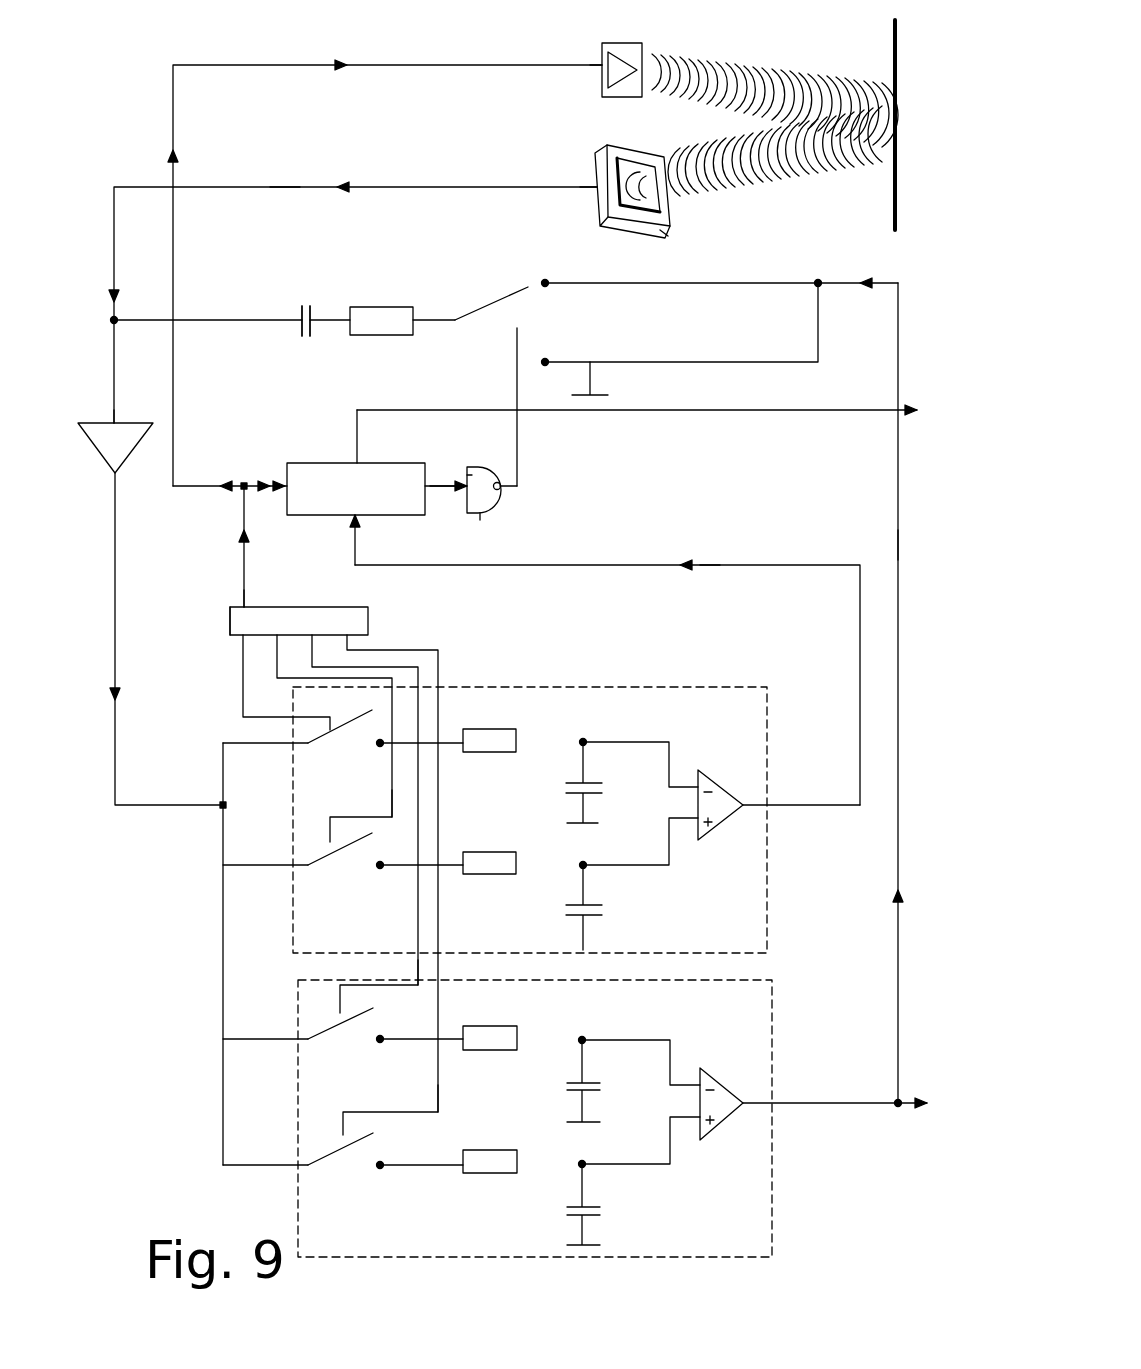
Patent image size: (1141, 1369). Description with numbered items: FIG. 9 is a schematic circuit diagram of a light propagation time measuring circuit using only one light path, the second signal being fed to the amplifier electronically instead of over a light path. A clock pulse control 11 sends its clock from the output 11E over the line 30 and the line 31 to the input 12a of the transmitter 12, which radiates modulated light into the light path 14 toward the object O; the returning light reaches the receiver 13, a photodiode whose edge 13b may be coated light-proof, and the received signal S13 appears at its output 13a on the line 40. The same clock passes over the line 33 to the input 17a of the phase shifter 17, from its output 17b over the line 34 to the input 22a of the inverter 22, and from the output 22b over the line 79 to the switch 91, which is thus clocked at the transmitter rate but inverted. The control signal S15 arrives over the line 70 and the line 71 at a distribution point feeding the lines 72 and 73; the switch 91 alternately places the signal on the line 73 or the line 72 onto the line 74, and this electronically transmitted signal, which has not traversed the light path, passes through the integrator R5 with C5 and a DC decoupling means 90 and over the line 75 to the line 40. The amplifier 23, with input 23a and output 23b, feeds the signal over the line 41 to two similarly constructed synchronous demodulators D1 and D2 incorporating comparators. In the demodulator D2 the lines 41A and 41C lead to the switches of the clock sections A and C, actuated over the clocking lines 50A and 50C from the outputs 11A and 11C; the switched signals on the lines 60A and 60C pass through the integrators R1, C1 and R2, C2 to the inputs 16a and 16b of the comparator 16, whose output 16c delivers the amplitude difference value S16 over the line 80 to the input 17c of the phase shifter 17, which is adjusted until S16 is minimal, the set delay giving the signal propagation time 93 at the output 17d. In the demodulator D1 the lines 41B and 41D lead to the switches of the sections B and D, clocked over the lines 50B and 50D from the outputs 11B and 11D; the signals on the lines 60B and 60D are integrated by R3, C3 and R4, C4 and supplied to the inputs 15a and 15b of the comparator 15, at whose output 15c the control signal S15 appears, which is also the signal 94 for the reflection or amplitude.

The transmitter 12 is at (628, 42).
The input of the transmitter 12a is at (602, 65).
The receiver 13 is at (600, 142).
The output of the receiver 13a is at (597, 182).
The edge of the photodiode 13b is at (668, 225).
The light path 14 is at (775, 75).
The object O is at (893, 222).
The line 31 is at (262, 68).
The line 40 is at (320, 187).
The received signal S13 is at (275, 187).
The line 71 is at (818, 280).
The line 72 is at (730, 362).
The line 73 is at (640, 285).
The line 74 is at (435, 318).
The input line 75 is at (215, 318).
The DC decoupling means 90 is at (300, 305).
The capacitor C5 is at (312, 305).
The integrator R5 is at (381, 321).
The switch 91 is at (495, 300).
The signal propagation time 93 is at (900, 415).
The line 79 is at (520, 430).
The phase shifter 17 is at (356, 489).
The input of the phase shifter 17a is at (282, 470).
The output of the phase shifter 17b is at (438, 517).
The input of the phase shifter 17c is at (365, 520).
The output of the phase shifter 17d is at (355, 445).
The line 33 is at (250, 480).
The line 34 is at (445, 478).
The inverter 22 is at (484, 468).
The input of the inverter 22a is at (470, 475).
The output of the inverter 22b is at (487, 515).
The line 80 is at (545, 562).
The amplitude difference value S16 is at (710, 563).
The control signal S15 is at (895, 545).
The line 70 is at (895, 1040).
The signal for the reflection or amplitude 94 is at (900, 1110).
The amplifier 23 is at (130, 423).
The inverter input 23a is at (112, 420).
The output of the amplifier 23b is at (117, 480).
The line 30 is at (240, 535).
The clock pulse control 11 is at (368, 620).
The output of the clock pulse control 11A is at (232, 615).
The output of the clock pulse control 11B is at (315, 630).
The output of the clock pulse control 11C is at (275, 640).
The output of the clock pulse control 11D is at (350, 640).
The output of the clock pulse control 11E is at (245, 600).
The clocking line 50A is at (243, 718).
The clocking line 50B is at (400, 987).
The clocking line 50C is at (392, 810).
The clocking line 50D is at (438, 1100).
The line 41 is at (140, 800).
The line 41A is at (240, 747).
The line 41B is at (240, 1037).
The line 41C is at (235, 870).
The line 41D is at (240, 1162).
The clock section A is at (346, 721).
The clock section B is at (346, 1025).
The clock section C is at (346, 845).
The clock section D is at (346, 1146).
The line 60A is at (443, 747).
The line 60B is at (450, 1043).
The line 60C is at (450, 868).
The line 60D is at (420, 1170).
The integrator R1 is at (485, 732).
The integrator R2 is at (498, 860).
The integrator R3 is at (500, 1035).
The integrator R4 is at (488, 1165).
The integrator capacitor C1 is at (600, 790).
The integrator capacitor C2 is at (605, 910).
The integrator capacitor C3 is at (600, 1090).
The integrator capacitor C4 is at (600, 1212).
The comparator 16 is at (725, 790).
The input of the comparator 16a is at (695, 785).
The input of the comparator 16b is at (692, 825).
The comparator output 16c is at (750, 810).
The comparator 15 is at (722, 1090).
The input of the comparator 15a is at (695, 1080).
The input of the comparator 15b is at (690, 1125).
The output of the comparator 15c is at (752, 1100).
The synchronous demodulator D1 is at (778, 1230).
The synchronous demodulator D2 is at (605, 685).